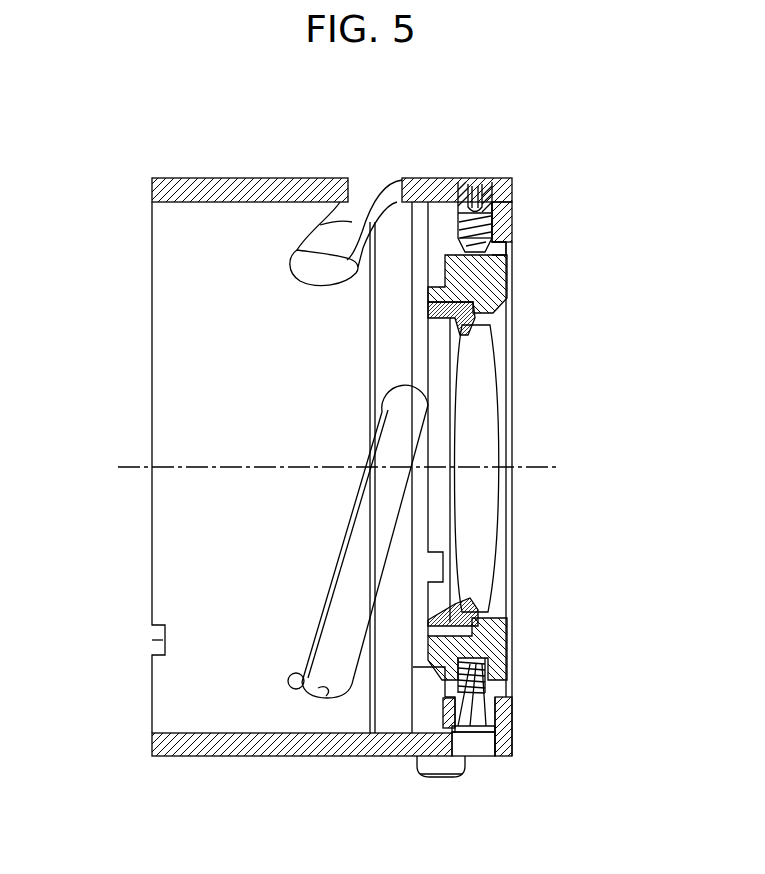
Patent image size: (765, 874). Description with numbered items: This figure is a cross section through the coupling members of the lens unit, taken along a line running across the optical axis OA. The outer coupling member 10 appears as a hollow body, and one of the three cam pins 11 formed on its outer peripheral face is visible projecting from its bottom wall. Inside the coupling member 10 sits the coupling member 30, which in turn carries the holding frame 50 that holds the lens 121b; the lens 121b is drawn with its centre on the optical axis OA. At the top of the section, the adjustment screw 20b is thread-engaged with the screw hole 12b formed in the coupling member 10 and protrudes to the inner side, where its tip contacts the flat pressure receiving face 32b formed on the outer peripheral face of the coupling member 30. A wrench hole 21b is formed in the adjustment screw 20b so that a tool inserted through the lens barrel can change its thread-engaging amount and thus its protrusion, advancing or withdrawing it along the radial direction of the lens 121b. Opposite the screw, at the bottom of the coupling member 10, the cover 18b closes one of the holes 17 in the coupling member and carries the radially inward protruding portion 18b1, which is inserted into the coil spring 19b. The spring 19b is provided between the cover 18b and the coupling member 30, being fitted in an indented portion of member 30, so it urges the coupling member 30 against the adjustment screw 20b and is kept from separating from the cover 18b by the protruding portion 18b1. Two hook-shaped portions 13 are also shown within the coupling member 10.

The coupling member 10 is at (265, 188).
The cam pin 11 is at (437, 771).
The screw hole 12b is at (462, 182).
The hook / engaging portion 13 is at (352, 178).
The screw head seat 17 is at (458, 746).
The cover 18b is at (503, 741).
The protruding portion 18b1 is at (487, 696).
The spring 19b is at (490, 670).
The adjustment screw 20b is at (490, 183).
The wrench hole 21b is at (474, 182).
The coupling member 30 is at (500, 283).
The pressure receiving face 32b is at (508, 249).
The holding frame 50 is at (470, 626).
The lens 121b is at (480, 507).
The optical axis OA is at (138, 466).